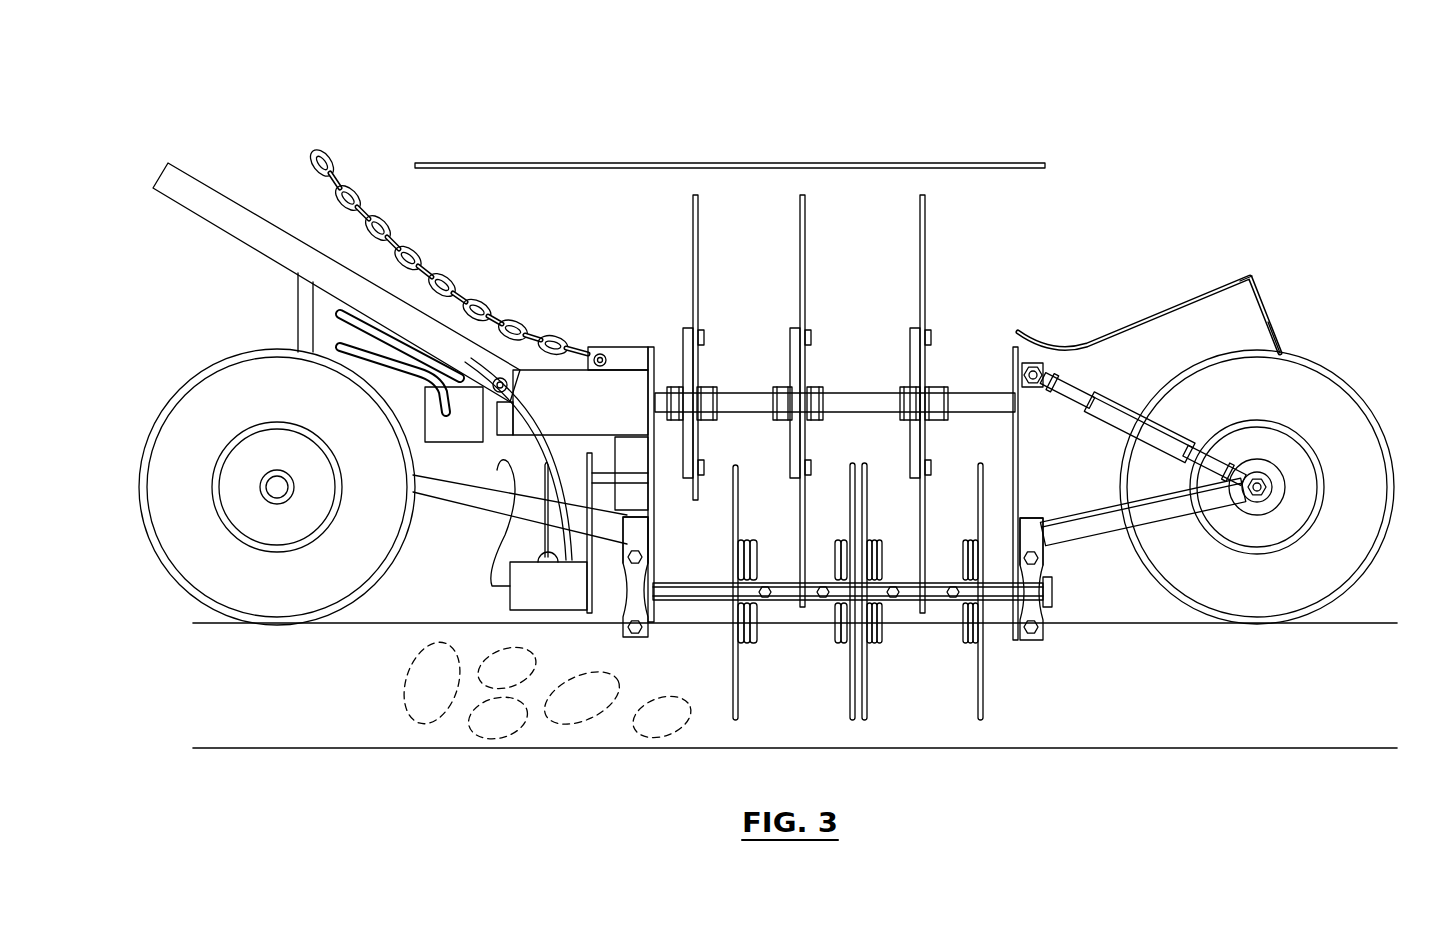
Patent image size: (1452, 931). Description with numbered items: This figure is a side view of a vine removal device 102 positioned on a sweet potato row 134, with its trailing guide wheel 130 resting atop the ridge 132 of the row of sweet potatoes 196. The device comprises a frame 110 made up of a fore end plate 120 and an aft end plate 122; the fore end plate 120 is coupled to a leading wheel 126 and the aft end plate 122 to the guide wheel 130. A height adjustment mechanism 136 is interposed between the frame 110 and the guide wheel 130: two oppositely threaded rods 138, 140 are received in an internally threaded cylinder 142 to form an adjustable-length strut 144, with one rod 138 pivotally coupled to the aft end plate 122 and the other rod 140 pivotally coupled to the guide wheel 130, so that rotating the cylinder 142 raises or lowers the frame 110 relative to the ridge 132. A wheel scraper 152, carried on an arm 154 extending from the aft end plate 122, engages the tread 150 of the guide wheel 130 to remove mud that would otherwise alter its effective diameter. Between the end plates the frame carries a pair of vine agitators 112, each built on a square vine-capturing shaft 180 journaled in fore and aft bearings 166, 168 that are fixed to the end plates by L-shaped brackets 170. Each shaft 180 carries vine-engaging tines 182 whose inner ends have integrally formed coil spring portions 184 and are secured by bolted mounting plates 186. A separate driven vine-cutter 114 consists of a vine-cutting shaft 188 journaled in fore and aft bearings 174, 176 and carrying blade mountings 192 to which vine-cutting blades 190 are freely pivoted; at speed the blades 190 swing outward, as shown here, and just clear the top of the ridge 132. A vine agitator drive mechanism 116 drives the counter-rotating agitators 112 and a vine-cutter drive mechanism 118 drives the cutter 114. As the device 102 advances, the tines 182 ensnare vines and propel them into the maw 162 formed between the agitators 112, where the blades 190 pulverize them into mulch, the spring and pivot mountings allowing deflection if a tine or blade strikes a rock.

The vine removal device 102 is at (560, 88).
The frame 110 is at (1074, 575).
The vine agitators 112 is at (1024, 704).
The driven vine-cutter 114 is at (1003, 235).
The vine agitator drive mechanism 116 is at (510, 602).
The vine-cutter drive mechanism 118 is at (447, 445).
The fore end plate 120 is at (653, 353).
The aft end plate 122 is at (1007, 355).
The leading wheel 126 is at (273, 370).
The trailing guide wheel 130 is at (1318, 578).
The ridge 132 is at (1160, 696).
The sweet potato row 134 is at (1205, 755).
The height adjustment mechanism 136 is at (1178, 380).
The threaded rod 138 is at (1073, 393).
The threaded rod 140 is at (1223, 465).
The internally threaded cylinder 142 is at (1170, 440).
The adjustable-length strut 144 is at (1040, 410).
The tread 150 is at (1330, 378).
The wheel scraper 152 is at (1283, 347).
The arm 154 is at (1252, 277).
The maw 162 is at (778, 582).
The fore bearing 166 is at (635, 597).
The aft bearing 168 is at (1050, 600).
The L-shaped brackets 170 is at (633, 527).
The fore bearing 174 is at (627, 387).
The aft bearing 176 is at (1022, 392).
The vine-capturing shaft 180 is at (998, 597).
The vine-engaging tines 182 is at (740, 502).
The coil spring portions 184 is at (838, 550).
The mounting plates 186 is at (932, 590).
The vine-cutting shaft 188 is at (855, 403).
The vine-cutting blades 190 is at (917, 233).
The blade mountings 192 is at (787, 363).
The sweet potatoes 196 is at (440, 708).